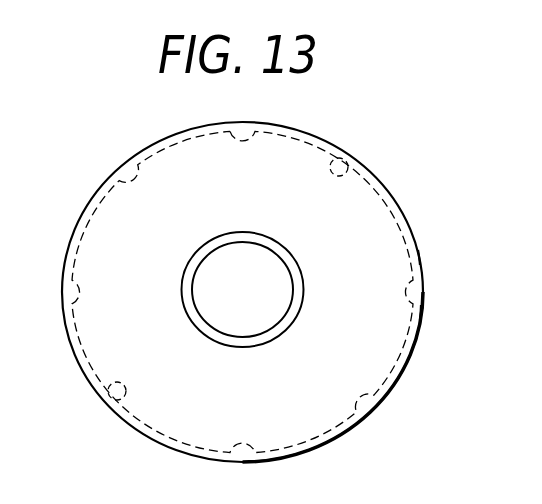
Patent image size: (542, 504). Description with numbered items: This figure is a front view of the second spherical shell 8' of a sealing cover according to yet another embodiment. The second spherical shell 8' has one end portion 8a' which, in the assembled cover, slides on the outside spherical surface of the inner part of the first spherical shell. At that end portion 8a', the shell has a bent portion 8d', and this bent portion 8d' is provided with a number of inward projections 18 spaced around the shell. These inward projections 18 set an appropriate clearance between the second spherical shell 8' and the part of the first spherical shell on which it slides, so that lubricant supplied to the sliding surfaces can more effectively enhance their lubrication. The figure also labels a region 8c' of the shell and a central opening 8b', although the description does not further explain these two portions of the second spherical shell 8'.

The second spherical shell 8' is at (242, 273).
The inward projections 18 is at (341, 160).
The bent portion 8d' is at (270, 291).
The outer rim 8c' is at (439, 250).
The one end portion 8a' is at (453, 319).
The central hub ring 8b' is at (280, 291).